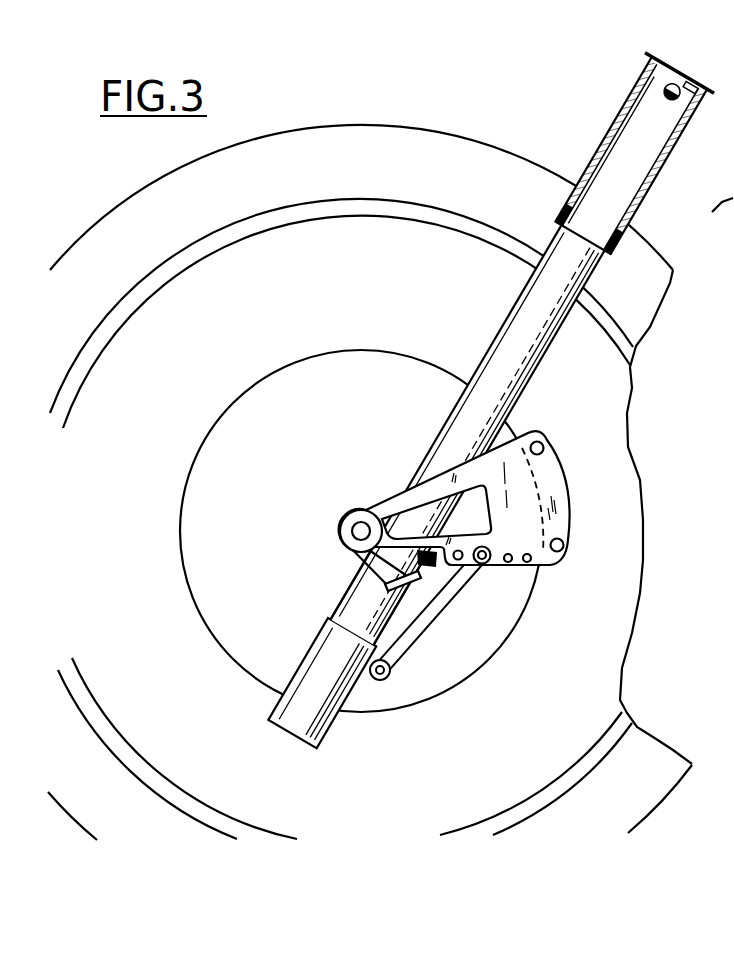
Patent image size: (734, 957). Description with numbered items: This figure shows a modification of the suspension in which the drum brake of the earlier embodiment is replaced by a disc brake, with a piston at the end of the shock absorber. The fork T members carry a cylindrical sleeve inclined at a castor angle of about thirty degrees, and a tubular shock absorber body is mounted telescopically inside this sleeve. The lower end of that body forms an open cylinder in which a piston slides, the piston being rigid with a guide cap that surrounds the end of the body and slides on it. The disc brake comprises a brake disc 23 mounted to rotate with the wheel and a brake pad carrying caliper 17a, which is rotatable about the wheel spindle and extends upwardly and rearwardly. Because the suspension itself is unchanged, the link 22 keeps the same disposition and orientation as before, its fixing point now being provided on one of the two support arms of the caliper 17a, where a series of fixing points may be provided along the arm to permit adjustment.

The brake pad carrying caliper 17a is at (571, 508).
The link 22 is at (440, 610).
The brake disc 23 is at (510, 603).